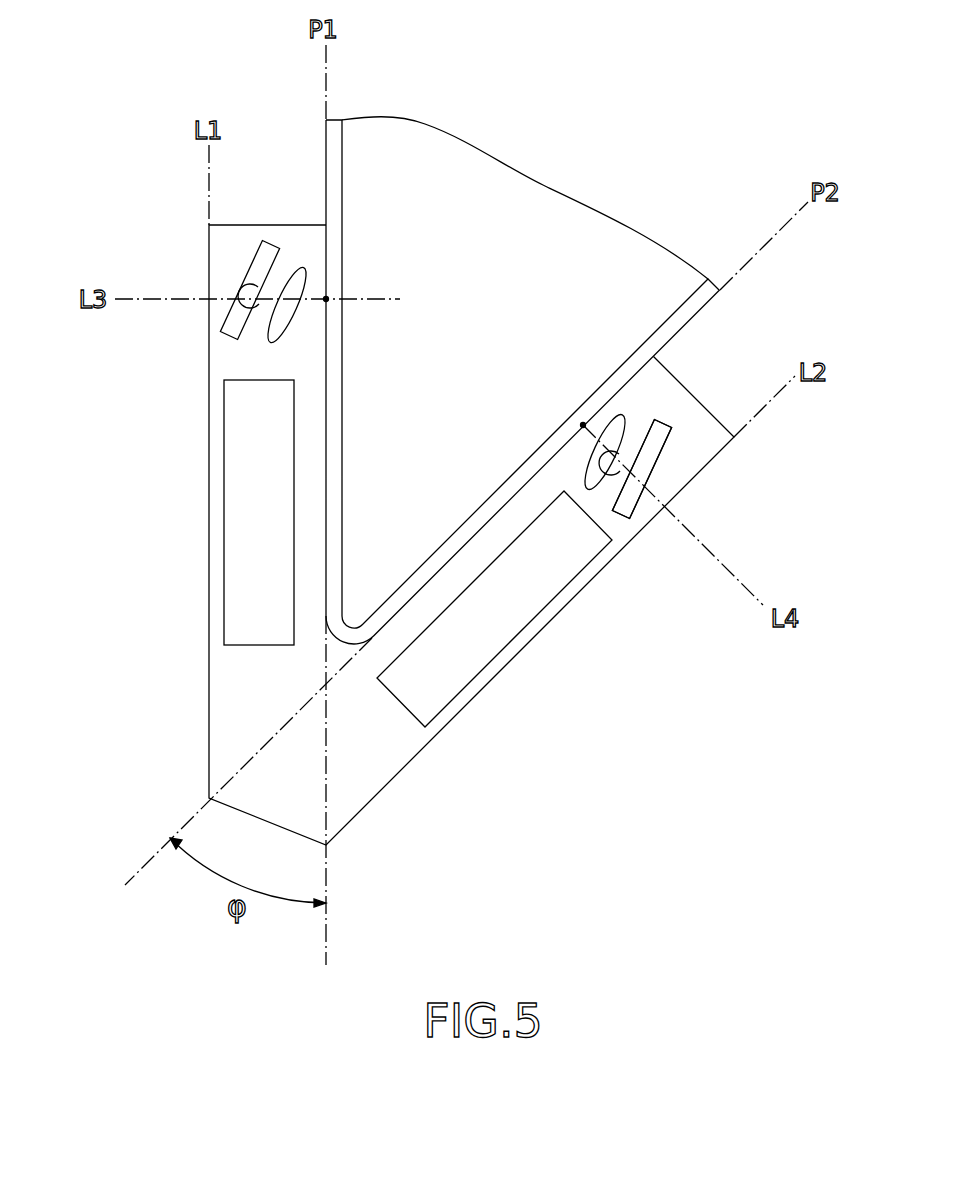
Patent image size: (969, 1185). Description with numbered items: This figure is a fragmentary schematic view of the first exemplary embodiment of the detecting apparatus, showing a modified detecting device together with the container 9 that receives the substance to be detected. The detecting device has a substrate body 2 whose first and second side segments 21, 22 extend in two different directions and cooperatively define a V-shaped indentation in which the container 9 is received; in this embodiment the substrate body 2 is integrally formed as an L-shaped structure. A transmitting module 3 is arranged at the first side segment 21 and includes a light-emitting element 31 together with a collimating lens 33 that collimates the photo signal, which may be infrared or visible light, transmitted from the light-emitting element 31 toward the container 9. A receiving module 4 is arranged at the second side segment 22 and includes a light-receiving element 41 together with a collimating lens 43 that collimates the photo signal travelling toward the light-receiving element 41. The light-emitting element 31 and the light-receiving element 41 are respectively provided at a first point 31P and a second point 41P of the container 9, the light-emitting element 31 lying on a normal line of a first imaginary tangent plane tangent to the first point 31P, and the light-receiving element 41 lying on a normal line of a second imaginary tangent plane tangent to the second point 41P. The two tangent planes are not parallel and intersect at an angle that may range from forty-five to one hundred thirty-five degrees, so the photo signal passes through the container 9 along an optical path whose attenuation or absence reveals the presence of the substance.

The substrate body 2 is at (198, 567).
The first side segment 21 is at (209, 483).
The second side segment 22 is at (574, 598).
The transmitting module 3 is at (247, 253).
The light-emitting element 31 is at (270, 284).
The first point 31P is at (329, 298).
The collimating lens 33 is at (289, 316).
The receiving module 4 is at (670, 464).
The light-receiving element 41 is at (638, 447).
The second point 41P is at (583, 425).
The collimating lens 43 is at (594, 470).
The container 9 is at (549, 178).